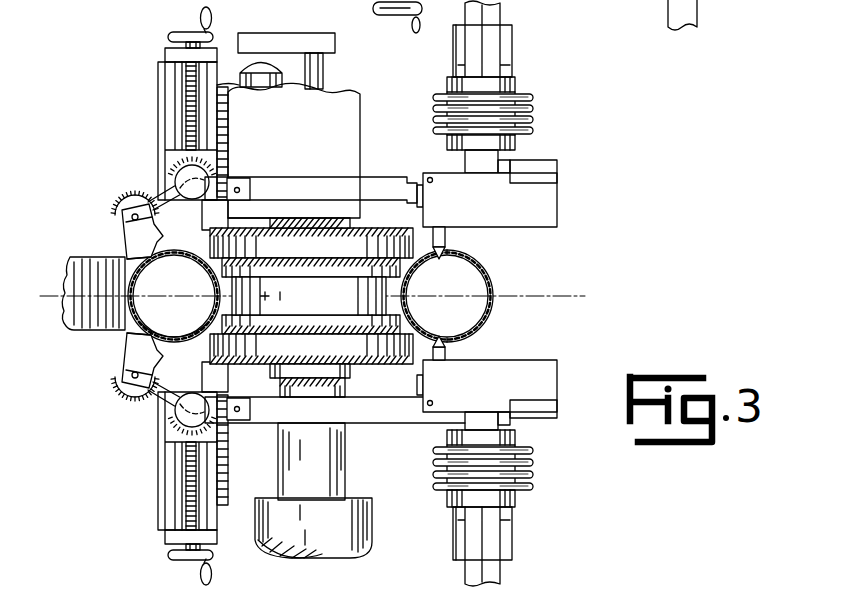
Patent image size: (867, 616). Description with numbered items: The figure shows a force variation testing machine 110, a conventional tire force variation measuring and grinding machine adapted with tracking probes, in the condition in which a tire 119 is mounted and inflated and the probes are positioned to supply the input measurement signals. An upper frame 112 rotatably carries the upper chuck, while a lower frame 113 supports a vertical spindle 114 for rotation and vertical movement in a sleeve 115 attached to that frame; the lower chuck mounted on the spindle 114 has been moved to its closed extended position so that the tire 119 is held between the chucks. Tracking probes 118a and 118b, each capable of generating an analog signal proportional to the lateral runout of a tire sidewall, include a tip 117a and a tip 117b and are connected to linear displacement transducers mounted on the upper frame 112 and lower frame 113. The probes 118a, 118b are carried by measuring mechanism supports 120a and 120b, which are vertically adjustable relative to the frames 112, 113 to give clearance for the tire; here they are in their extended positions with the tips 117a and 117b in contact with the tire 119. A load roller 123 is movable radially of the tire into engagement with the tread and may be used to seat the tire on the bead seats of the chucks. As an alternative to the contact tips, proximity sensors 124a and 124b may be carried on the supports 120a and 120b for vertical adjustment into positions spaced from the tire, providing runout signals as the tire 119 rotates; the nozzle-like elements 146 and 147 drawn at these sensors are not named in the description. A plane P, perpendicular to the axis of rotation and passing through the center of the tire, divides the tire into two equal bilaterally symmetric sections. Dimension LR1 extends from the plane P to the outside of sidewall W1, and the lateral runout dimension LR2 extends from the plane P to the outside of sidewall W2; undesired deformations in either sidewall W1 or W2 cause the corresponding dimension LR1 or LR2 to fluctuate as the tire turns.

The force variation testing machine 110 is at (578, 168).
The upper frame 112 is at (472, 42).
The lower frame 113 is at (493, 540).
The vertical spindle 114 is at (345, 457).
The sleeve 115 is at (372, 524).
The tip 117a is at (449, 250).
The tip 117b is at (447, 341).
The tracking probe 118a is at (446, 236).
The tracking probe 118b is at (448, 353).
The tire 119 is at (492, 326).
The measuring mechanism support 120a is at (546, 206).
The measuring mechanism support 120b is at (548, 381).
The load roller 123 is at (75, 257).
The proximity sensor 124a is at (116, 233).
The proximity sensor 124b is at (128, 353).
The upper nozzle 146 is at (127, 258).
The lower nozzle 147 is at (138, 333).
The plane P is at (583, 296).
The sidewall W1 is at (186, 256).
The sidewall W2 is at (186, 341).
The dimension LR1 is at (440, 261).
The lateral runout dimension LR2 is at (440, 298).